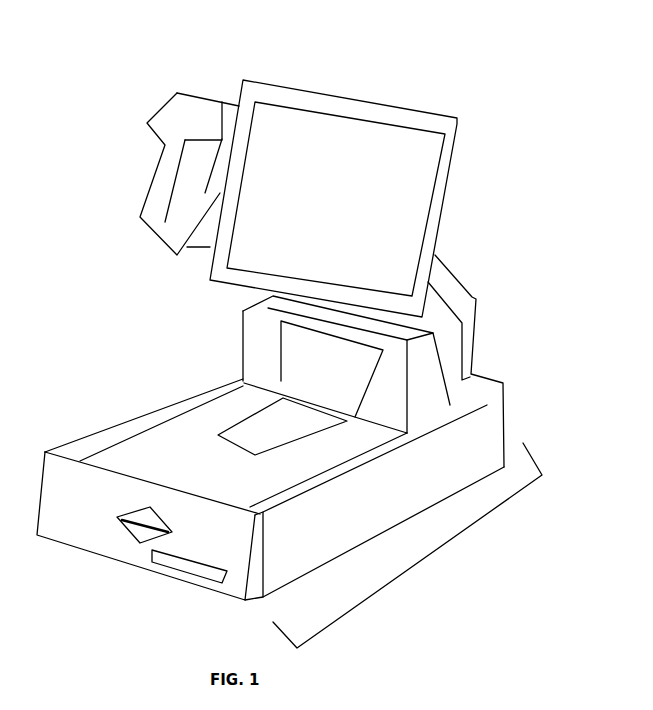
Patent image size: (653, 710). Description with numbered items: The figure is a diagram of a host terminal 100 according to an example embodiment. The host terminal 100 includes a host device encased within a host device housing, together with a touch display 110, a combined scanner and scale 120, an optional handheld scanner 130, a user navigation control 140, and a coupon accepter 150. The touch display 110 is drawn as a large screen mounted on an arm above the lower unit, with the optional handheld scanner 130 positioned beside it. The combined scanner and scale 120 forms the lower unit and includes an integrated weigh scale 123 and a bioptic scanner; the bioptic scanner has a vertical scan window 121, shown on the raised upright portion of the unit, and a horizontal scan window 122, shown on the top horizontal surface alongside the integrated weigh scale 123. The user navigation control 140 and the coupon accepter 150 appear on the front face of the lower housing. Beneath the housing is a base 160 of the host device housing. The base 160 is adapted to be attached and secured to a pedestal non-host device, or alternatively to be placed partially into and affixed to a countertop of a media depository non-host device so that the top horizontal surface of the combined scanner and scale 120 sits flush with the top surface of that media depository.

The host terminal 100 is at (537, 103).
The touch display 110 is at (285, 85).
The combined scanner and scale 120 is at (262, 351).
The vertical scan window 121 is at (332, 369).
The horizontal scan window 122 is at (282, 426).
The integrated weigh scale 123 is at (144, 430).
The handheld scanner 130 is at (155, 168).
The user navigation control 140 is at (117, 517).
The coupon accepter 150 is at (203, 578).
The base 160 is at (415, 565).